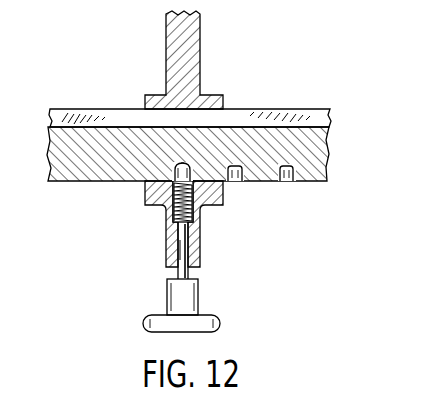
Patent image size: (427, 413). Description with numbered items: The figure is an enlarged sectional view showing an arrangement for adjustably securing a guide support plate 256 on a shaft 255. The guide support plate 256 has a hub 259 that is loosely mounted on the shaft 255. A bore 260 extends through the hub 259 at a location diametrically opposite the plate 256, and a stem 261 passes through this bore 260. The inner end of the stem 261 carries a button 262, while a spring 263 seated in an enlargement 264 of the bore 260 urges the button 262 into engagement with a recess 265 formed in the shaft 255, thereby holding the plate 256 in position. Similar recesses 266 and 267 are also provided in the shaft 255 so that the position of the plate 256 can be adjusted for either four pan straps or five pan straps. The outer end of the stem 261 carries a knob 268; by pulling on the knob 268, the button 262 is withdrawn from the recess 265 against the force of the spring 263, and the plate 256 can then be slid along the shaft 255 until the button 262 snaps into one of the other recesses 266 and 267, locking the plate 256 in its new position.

The shaft 255 is at (325, 148).
The guide support plate 256 is at (200, 39).
The hub 259 is at (148, 203).
The bore 260 is at (179, 246).
The stem 261 is at (190, 273).
The button 262 is at (185, 172).
The spring 263 is at (192, 212).
The enlargement 264 is at (172, 222).
The recess 265 is at (190, 174).
The recess 266 is at (238, 181).
The recess 267 is at (292, 182).
The knob 268 is at (222, 323).